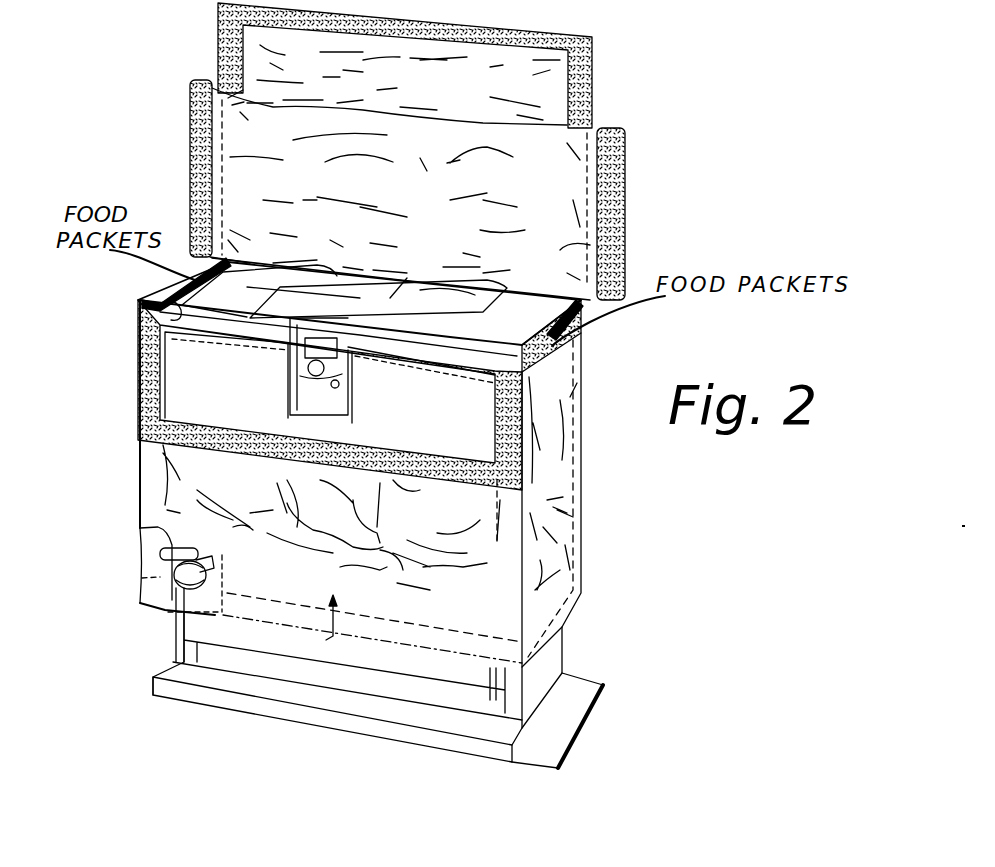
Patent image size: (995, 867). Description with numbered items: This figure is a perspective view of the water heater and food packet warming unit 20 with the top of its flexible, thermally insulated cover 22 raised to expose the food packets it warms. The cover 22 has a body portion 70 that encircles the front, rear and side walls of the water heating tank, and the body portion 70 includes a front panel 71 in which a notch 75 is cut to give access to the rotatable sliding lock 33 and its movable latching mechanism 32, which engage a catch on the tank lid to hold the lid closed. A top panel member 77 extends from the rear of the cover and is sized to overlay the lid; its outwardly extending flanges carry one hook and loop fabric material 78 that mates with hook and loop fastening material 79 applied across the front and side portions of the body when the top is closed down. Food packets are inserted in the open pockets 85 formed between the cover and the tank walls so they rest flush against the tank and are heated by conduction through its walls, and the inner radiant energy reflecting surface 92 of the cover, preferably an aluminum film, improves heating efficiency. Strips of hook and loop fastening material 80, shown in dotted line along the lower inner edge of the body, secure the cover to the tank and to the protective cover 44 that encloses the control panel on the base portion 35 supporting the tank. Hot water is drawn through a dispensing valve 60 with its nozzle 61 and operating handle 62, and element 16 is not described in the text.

The water heater and food packet warming unit 20 is at (138, 470).
The thermally insulated cover 22 is at (337, 666).
The spigot mounting plate 16 is at (198, 603).
The movable latching mechanism 32 is at (412, 423).
The rotatable sliding lock 33 is at (250, 380).
The base portion 35 is at (556, 667).
The protective cover 44 is at (370, 657).
The dispensing valve 60 is at (222, 572).
The nozzle 61 is at (172, 608).
The operating handle 62 is at (142, 528).
The body portion 70 is at (572, 550).
The front panel 71 is at (458, 614).
The notch 75 is at (260, 405).
The top panel member 77 is at (583, 157).
The hook and loop fabric material 78 is at (197, 123).
The hook and loop fastening material 79 is at (142, 368).
The hook and loop fastening strips 80 is at (567, 612).
The open pockets 85 is at (163, 300).
The inner radiant energy reflecting surface 92 is at (262, 152).